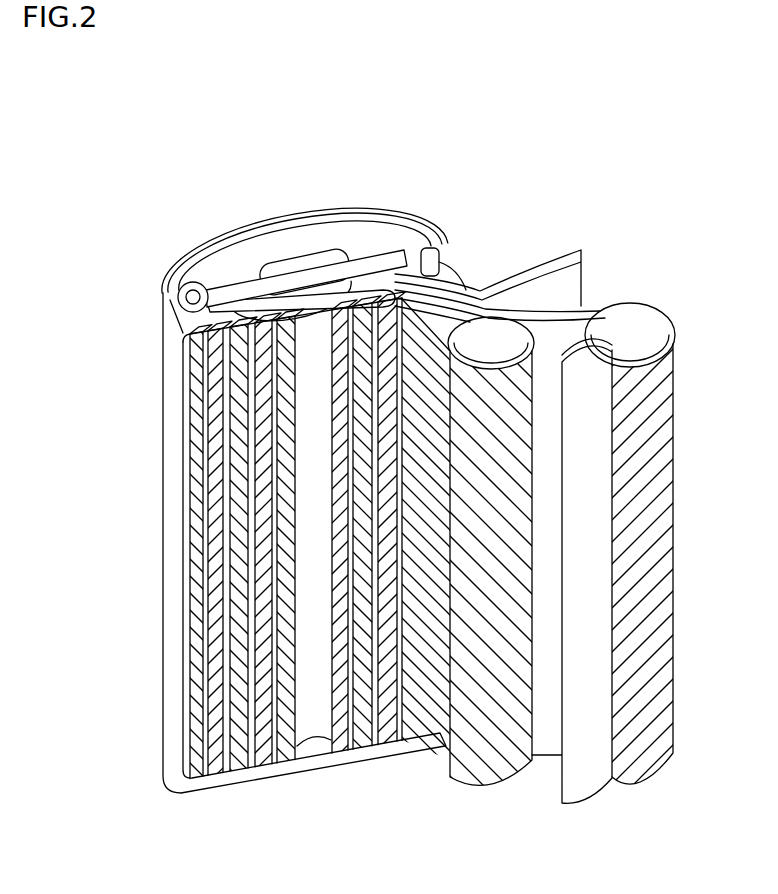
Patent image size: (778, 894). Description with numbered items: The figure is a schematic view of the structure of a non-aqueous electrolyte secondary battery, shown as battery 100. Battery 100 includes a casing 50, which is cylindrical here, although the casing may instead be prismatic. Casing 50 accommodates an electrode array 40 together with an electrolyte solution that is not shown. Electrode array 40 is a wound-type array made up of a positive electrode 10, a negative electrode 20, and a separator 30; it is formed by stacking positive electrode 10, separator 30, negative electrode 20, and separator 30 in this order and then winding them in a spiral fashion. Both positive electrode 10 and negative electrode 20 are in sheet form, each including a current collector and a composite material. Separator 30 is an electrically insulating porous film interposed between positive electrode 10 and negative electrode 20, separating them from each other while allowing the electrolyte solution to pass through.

The battery 100 is at (113, 117).
The casing 50 is at (163, 462).
The electrode array 40 is at (666, 196).
The positive electrode 10 is at (461, 338).
The negative electrode 20 is at (638, 329).
The separator 30 is at (517, 329).